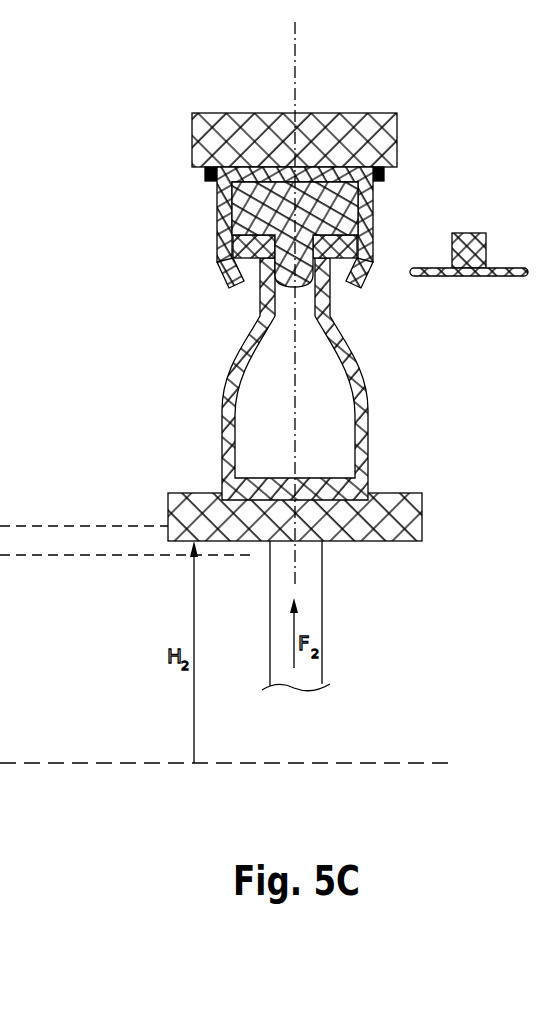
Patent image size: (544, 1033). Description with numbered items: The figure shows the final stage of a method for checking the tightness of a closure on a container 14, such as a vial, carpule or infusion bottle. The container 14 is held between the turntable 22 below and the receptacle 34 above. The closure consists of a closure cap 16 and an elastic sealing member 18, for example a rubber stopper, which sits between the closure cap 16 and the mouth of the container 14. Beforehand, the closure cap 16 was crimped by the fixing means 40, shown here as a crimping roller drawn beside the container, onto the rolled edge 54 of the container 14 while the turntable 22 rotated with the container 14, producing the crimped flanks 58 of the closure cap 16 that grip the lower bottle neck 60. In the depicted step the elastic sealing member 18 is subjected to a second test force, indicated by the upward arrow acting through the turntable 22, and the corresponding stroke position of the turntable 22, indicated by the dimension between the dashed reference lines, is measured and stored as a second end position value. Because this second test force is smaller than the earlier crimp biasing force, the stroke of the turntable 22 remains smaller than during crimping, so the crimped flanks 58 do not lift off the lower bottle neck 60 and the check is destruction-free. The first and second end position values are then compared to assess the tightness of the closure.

The container 14 is at (362, 440).
The closure cap 16 is at (224, 216).
The elastic sealing member 18 is at (340, 202).
The turntable 22 is at (183, 513).
The receptacle 34 is at (345, 127).
The fixing means 40 is at (475, 240).
The rolled edge 54 is at (262, 298).
The crimped flanks 58 is at (205, 280).
The lower bottle neck 60 is at (336, 285).